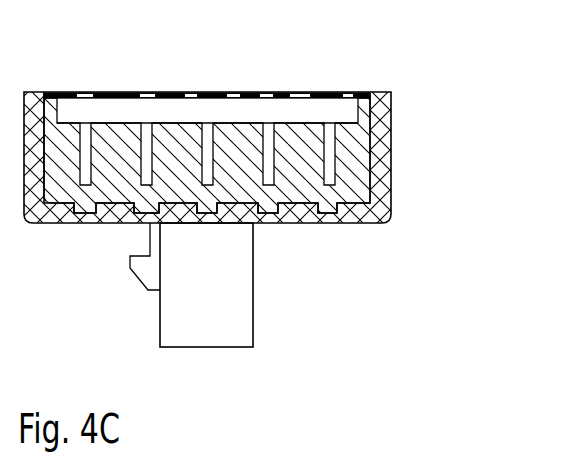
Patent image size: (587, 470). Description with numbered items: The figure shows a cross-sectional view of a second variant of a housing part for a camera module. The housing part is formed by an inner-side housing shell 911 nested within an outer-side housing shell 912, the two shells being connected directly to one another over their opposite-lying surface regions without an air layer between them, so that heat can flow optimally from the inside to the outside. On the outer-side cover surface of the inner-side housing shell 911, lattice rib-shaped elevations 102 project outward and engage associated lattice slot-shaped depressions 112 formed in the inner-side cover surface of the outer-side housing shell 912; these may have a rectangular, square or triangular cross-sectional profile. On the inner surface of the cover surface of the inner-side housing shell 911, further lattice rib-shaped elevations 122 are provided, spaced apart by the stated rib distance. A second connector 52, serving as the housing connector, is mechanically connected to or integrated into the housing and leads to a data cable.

The lattice rib-shaped elevations 122 is at (293, 110).
The lattice rib-shaped elevations 102 is at (137, 223).
The lattice slot-shaped depressions 112 is at (328, 223).
The second connector 52 is at (240, 317).
The inner-side housing shell 911 is at (345, 196).
The outer-side housing shell 912 is at (378, 188).